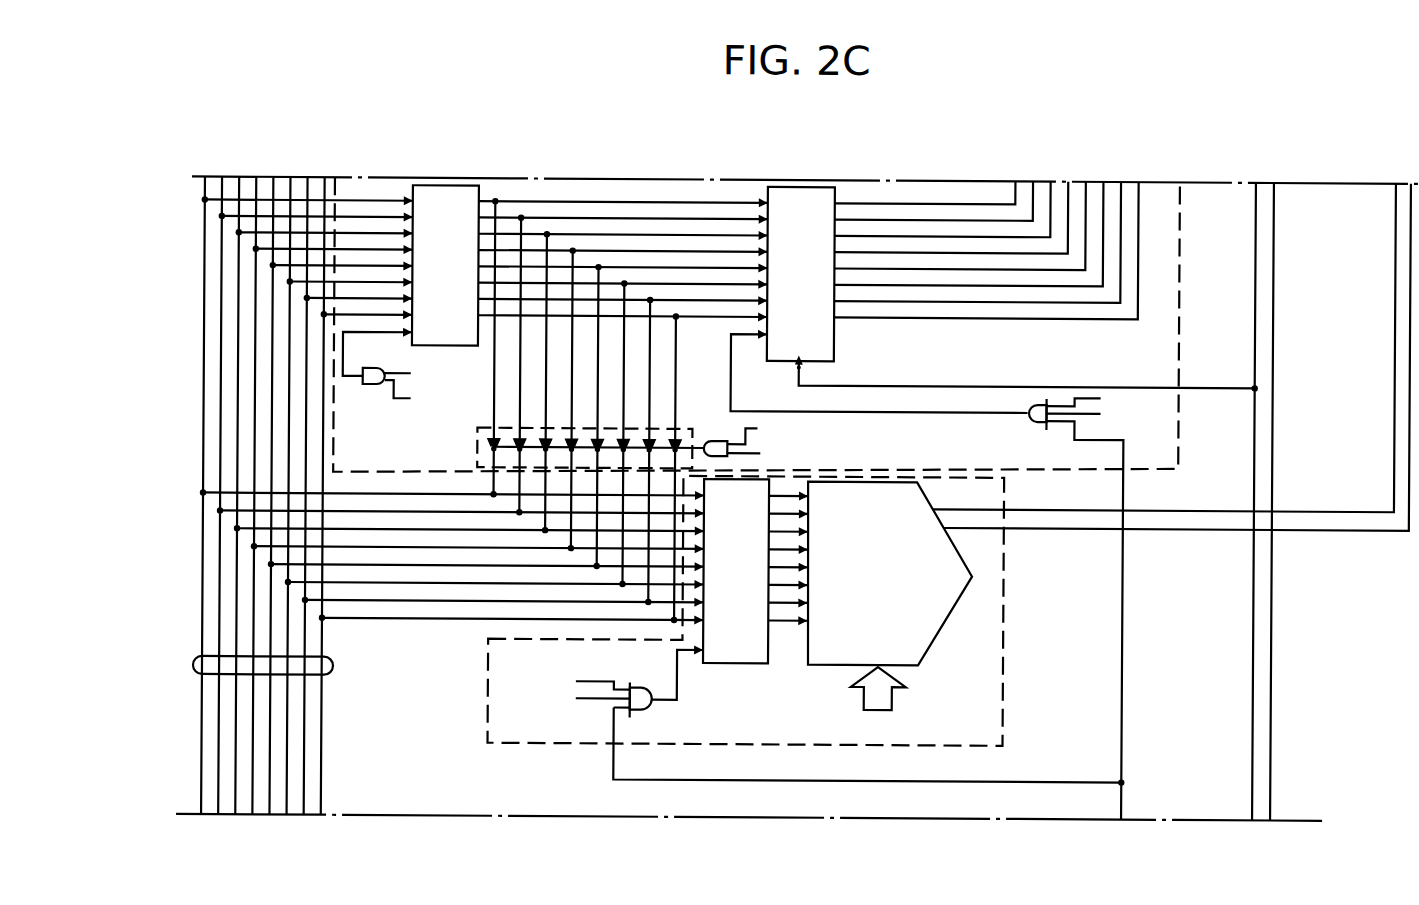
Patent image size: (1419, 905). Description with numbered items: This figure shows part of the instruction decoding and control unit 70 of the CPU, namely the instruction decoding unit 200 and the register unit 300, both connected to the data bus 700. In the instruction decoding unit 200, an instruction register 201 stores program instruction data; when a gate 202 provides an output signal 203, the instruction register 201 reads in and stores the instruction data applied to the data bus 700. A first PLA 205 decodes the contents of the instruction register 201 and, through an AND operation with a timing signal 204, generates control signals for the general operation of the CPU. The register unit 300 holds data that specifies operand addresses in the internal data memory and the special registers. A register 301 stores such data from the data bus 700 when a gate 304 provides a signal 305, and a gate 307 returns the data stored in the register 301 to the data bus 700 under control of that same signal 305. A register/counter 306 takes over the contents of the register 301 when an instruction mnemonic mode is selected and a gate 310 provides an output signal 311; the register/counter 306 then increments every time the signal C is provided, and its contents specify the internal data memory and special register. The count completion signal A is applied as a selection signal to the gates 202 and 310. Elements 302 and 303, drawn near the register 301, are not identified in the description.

The instruction decoding and control unit 70 is at (1356, 670).
The instruction decoding unit 200 is at (1004, 596).
The instruction register 201 is at (748, 664).
The gate 202 is at (653, 704).
The output signal 203 is at (678, 684).
The timing signal 204 is at (898, 700).
The first PLA 205 is at (953, 611).
The register unit 300 is at (1178, 237).
The register 301 is at (436, 187).
The AND gate 302 is at (393, 384).
The load line 303 is at (362, 380).
The gate 304 is at (735, 441).
The output signal 305 is at (704, 440).
The register/counter 306 is at (833, 351).
The gate 307 is at (477, 458).
The gate 310 is at (1040, 422).
The output signal 311 is at (923, 411).
The data bus 700 is at (334, 668).
The count completion signal A is at (1123, 810).
The signal C is at (1254, 430).